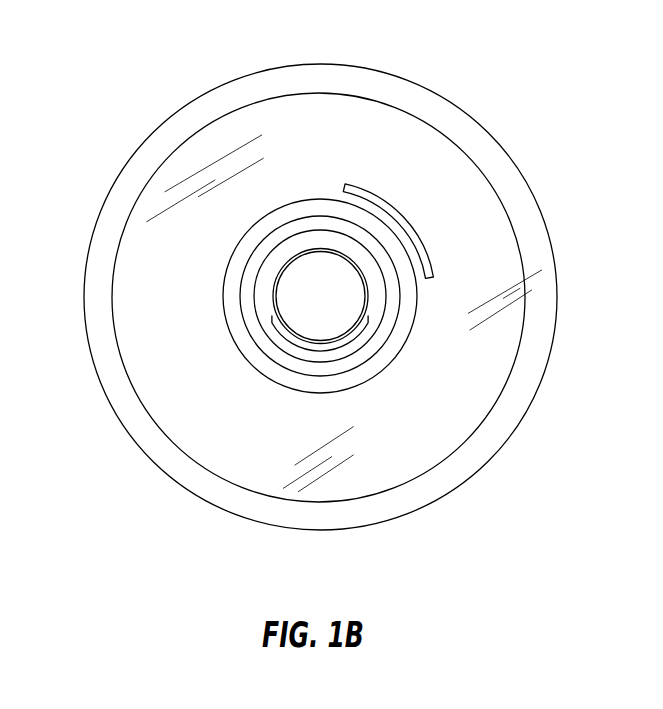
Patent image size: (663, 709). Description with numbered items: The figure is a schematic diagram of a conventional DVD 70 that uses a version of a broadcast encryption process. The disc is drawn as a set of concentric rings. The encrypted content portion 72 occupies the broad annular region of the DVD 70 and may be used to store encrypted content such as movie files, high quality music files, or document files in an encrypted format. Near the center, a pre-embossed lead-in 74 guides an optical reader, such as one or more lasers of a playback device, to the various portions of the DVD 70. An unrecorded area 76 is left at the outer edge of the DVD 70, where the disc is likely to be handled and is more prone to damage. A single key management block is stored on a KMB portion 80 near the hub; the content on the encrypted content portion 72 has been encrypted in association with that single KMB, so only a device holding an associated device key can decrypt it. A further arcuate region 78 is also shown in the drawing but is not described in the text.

The sensor assembly 70 is at (470, 66).
The housing face 72 is at (437, 173).
The central ring structure 74 is at (238, 285).
The outer rim 76 is at (123, 203).
The arcuate slot 78 is at (425, 240).
The arcuate bracket 80 is at (385, 326).